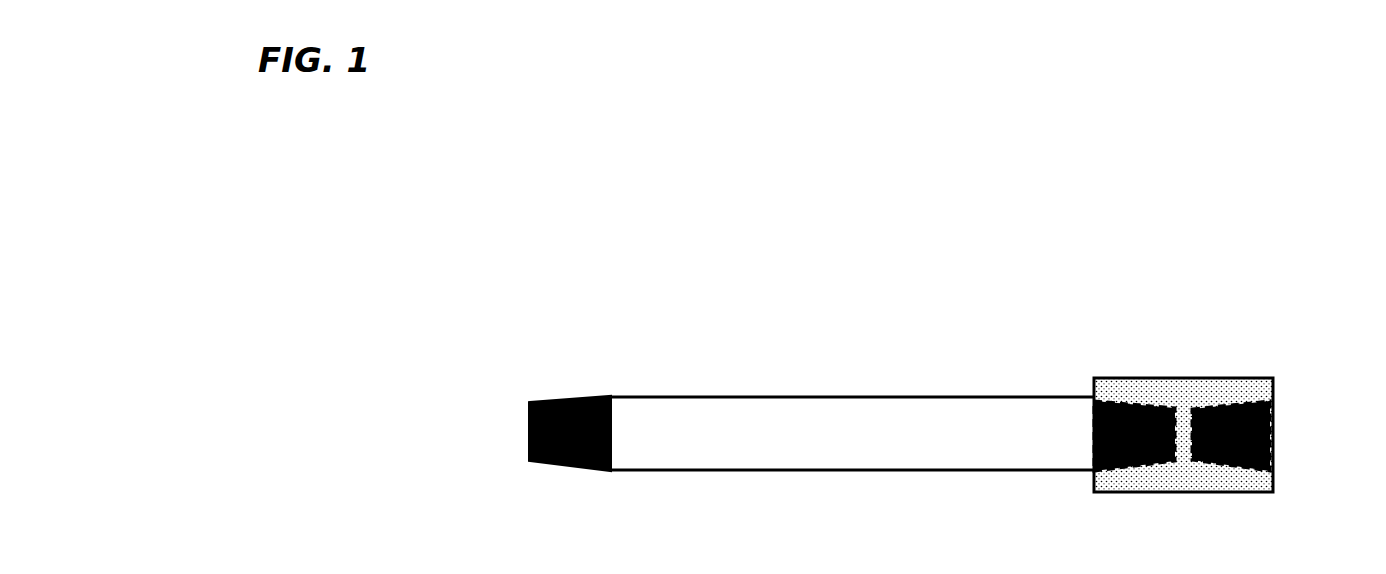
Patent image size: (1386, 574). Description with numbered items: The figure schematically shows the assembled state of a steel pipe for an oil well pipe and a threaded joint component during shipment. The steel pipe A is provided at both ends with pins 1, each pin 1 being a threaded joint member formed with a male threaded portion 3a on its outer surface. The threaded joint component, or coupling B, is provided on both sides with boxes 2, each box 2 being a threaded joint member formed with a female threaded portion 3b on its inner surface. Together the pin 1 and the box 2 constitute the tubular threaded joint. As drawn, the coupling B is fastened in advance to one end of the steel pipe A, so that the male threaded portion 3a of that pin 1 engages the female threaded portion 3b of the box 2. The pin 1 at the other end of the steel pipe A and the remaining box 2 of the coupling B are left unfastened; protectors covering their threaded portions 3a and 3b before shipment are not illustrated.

The pin 1 is at (573, 388).
The box 2 is at (1140, 372).
The male threaded portion 3a is at (542, 403).
The female threaded portion 3b is at (1129, 462).
The steel pipe A is at (855, 305).
The threaded joint component (coupling) B is at (1187, 312).